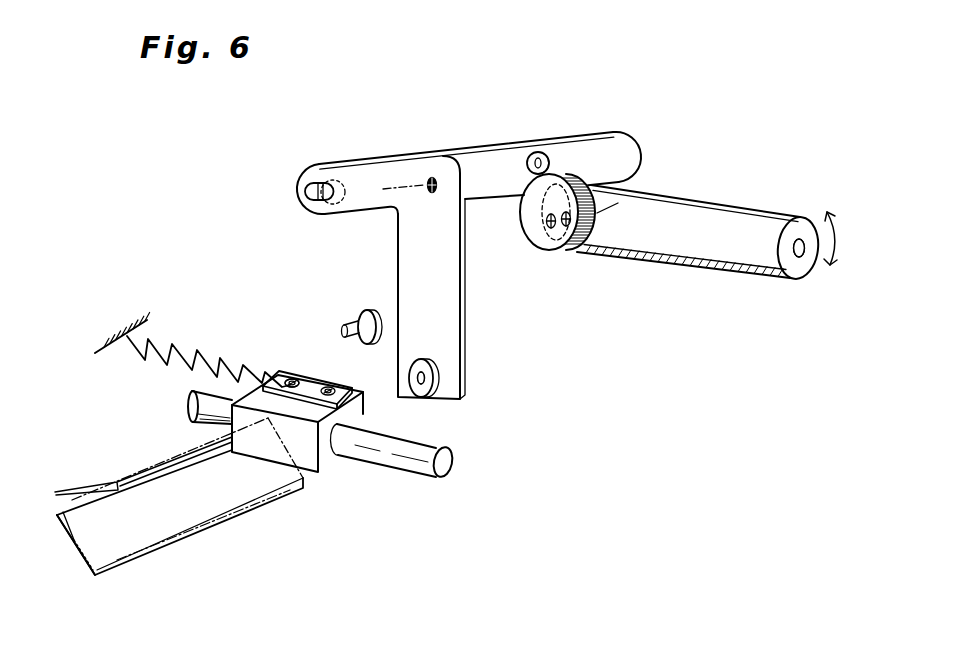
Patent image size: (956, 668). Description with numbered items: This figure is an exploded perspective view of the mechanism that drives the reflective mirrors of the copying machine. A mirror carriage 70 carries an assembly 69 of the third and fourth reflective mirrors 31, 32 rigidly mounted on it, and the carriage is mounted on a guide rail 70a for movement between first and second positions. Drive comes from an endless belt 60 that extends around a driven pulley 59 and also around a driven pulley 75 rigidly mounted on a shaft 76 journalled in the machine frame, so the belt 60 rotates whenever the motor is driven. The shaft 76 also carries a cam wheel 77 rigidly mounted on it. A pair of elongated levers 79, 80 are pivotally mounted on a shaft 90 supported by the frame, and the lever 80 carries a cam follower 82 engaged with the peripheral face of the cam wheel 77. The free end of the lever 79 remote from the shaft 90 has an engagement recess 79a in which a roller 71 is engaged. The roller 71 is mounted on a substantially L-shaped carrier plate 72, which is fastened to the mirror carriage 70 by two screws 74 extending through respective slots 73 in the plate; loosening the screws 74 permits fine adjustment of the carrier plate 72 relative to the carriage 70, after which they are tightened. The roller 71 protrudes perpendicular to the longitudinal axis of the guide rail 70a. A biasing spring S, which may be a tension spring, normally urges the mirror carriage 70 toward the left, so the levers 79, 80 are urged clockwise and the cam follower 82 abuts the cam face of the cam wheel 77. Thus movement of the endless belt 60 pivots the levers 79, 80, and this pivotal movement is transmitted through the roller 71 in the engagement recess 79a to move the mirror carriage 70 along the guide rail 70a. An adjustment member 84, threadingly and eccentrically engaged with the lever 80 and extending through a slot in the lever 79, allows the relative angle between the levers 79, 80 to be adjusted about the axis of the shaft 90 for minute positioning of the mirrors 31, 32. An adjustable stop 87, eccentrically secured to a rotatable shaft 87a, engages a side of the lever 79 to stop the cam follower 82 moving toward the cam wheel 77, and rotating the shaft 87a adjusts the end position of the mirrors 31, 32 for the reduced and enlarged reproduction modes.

The biasing spring S is at (170, 345).
The third reflective mirror 31 is at (83, 565).
The fourth reflective mirror 32 is at (123, 470).
The driven pulley 59 is at (800, 281).
The endless belt 60 is at (741, 206).
The assembly of third and fourth reflective mirrors 69 is at (218, 531).
The mirror carriage 70 is at (330, 456).
The guide rail 70a is at (416, 463).
The roller 71 is at (423, 396).
The carrier plate 72 is at (321, 386).
The slots 73 is at (284, 378).
The screws 74 is at (292, 378).
The driven pulley 75 is at (603, 217).
The shaft 76 is at (524, 233).
The cam wheel 77 is at (533, 250).
The elongated lever 79 is at (443, 305).
The engagement recess 79a is at (437, 371).
The elongated lever 80 is at (628, 153).
The cam follower 82 is at (539, 152).
The adjustment member 84 is at (316, 195).
The adjustable stop 87 is at (342, 328).
The rotatable shaft 87a is at (368, 309).
The shaft 90 is at (397, 187).